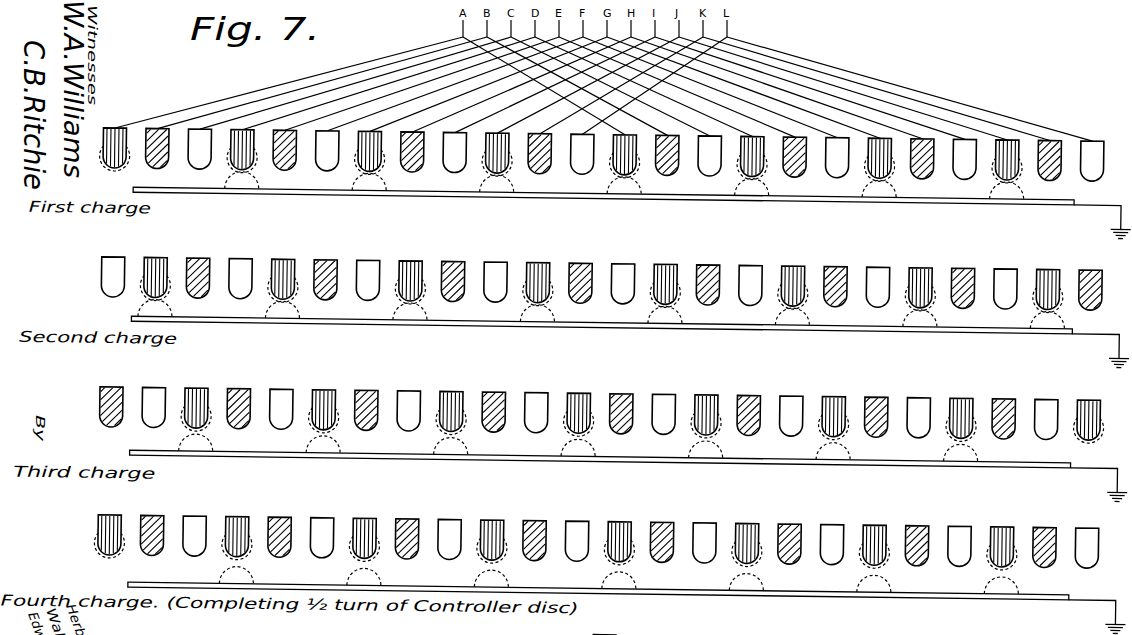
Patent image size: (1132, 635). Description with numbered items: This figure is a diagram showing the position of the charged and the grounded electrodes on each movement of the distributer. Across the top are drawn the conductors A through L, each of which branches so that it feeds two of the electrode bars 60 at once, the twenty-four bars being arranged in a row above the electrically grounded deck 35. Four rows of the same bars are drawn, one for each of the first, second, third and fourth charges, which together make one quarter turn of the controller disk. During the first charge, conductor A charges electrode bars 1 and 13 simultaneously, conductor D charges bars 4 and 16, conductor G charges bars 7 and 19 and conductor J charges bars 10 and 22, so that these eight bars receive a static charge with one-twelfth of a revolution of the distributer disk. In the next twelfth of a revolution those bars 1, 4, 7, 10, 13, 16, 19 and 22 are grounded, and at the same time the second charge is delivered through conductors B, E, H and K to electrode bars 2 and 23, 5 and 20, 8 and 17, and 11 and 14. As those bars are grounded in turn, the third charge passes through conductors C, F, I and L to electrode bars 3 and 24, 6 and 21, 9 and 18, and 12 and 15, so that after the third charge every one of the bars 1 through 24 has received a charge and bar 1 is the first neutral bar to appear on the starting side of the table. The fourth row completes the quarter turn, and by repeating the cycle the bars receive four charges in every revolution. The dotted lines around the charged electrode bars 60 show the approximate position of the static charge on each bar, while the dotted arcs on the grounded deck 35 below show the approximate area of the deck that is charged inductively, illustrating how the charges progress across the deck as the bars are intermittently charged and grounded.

The electrode bar 1 is at (115, 142).
The electrode bar 2 is at (157, 142).
The electrode bar 3 is at (200, 143).
The electrode bar 4 is at (242, 144).
The electrode bar 5 is at (285, 144).
The electrode bar 6 is at (327, 145).
The electrode bar 7 is at (370, 145).
The electrode bar 8 is at (412, 146).
The electrode bar 9 is at (455, 146).
The electrode bar 10 is at (497, 147).
The electrode bar 11 is at (540, 148).
The electrode bar 12 is at (582, 148).
The electrode bar 13 is at (625, 149).
The electrode bar 14 is at (667, 149).
The electrode bar 15 is at (710, 150).
The electrode bar 16 is at (752, 150).
The electrode bar 17 is at (795, 151).
The electrode bar 18 is at (837, 152).
The electrode bar 19 is at (880, 152).
The electrode bar 20 is at (922, 153).
The electrode bar 21 is at (965, 153).
The electrode bar 22 is at (1007, 154).
The electrode bar 23 is at (1050, 154).
The electrode bar 24 is at (1092, 155).
The electrically grounded deck 35 is at (553, 188).
The electrode bar 60 is at (452, 159).